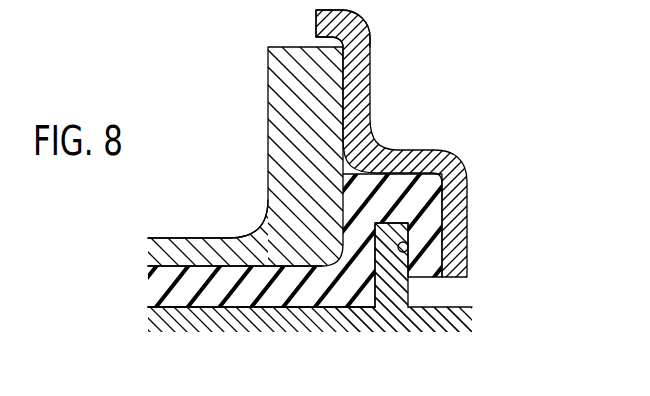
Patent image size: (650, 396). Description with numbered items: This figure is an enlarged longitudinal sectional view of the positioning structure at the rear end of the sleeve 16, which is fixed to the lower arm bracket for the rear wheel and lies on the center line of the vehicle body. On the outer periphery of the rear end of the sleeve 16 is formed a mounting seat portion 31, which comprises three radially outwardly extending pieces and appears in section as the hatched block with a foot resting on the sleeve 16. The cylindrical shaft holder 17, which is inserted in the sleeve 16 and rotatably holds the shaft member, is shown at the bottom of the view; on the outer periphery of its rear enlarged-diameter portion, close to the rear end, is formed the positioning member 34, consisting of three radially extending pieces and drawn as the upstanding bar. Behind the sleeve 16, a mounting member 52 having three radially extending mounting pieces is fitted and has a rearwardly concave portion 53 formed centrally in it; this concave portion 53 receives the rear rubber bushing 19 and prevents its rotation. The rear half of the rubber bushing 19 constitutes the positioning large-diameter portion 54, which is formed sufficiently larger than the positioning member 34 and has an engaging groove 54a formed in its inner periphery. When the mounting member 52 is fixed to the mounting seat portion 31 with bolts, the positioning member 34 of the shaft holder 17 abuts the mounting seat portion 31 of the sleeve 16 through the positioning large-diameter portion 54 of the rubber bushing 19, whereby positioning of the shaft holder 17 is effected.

The sleeve 16 is at (229, 260).
The shaft holder 17 is at (312, 331).
The rear rubber bushing 19 is at (233, 290).
The mounting seat portion 31 is at (292, 105).
The positioning member 34 is at (390, 290).
The mounting member 52 is at (360, 53).
The concave portion 53 is at (458, 190).
The positioning large-diameter portion 54 is at (390, 192).
The engaging groove 54a is at (408, 247).